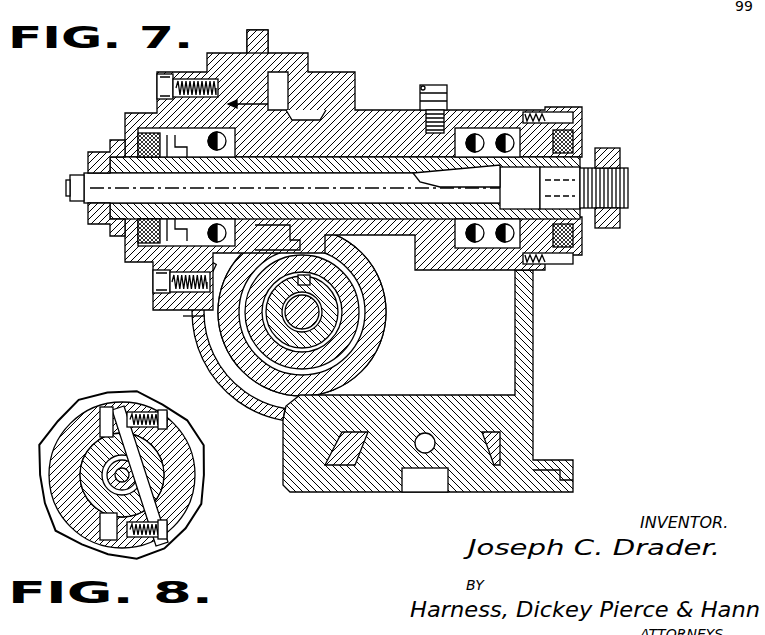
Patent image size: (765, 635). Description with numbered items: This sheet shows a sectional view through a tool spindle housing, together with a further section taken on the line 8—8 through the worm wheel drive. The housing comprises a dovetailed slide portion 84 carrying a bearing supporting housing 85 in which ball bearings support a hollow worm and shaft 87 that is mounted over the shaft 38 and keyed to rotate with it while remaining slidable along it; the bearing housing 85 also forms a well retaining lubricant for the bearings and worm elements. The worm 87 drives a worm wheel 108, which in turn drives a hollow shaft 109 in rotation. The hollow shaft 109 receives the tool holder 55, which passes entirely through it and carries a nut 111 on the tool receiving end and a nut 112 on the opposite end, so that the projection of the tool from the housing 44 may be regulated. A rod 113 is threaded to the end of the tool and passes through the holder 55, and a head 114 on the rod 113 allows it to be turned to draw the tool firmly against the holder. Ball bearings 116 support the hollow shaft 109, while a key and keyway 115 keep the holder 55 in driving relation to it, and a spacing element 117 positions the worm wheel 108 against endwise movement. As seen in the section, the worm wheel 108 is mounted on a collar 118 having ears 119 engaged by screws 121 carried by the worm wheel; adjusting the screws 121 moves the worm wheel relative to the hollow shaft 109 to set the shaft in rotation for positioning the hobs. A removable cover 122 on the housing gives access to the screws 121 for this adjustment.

In FIG. 7, the section line 8— 8 is at (216, 209).
In FIG. 7, the shaft 38 is at (315, 308).
In FIG. 7, the housing 44 is at (357, 73).
In FIG. 7, the tool holder 55 is at (628, 166).
In FIG. 7, the dovetailed slide portion 84 is at (528, 373).
In FIG. 7, the bearing supporting housing 85 is at (386, 289).
In FIG. 7, the hollow worm and shaft 87 is at (333, 333).
In FIG. 7, the worm wheel 108 is at (318, 115).
In FIG. 7, the shaft 109 is at (362, 162).
In FIG. 7, the nut 111 is at (602, 150).
In FIG. 7, the nut 112 is at (96, 152).
In FIG. 7, the rod 113 is at (92, 216).
In FIG. 7, the head 114 is at (70, 190).
In FIG. 7, the key and keyway 115 is at (484, 112).
In FIG. 7, the ball bearings 116 is at (218, 108).
In FIG. 7, the spacing element 117 is at (445, 168).
In FIG. 7, the collar 118 is at (272, 133).
In FIG. 8, the collar 118 is at (108, 428).
In FIG. 8, the ears 119 is at (123, 418).
In FIG. 8, the screws 121 is at (192, 380).
In FIG. 7, the removable cover 122 is at (270, 56).